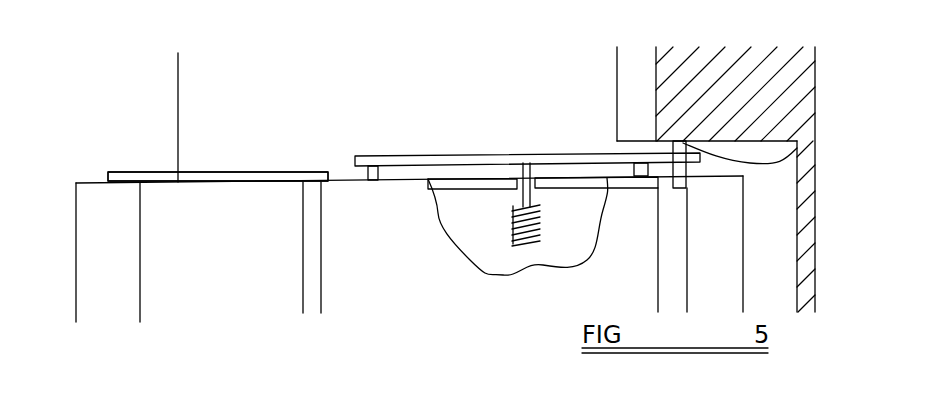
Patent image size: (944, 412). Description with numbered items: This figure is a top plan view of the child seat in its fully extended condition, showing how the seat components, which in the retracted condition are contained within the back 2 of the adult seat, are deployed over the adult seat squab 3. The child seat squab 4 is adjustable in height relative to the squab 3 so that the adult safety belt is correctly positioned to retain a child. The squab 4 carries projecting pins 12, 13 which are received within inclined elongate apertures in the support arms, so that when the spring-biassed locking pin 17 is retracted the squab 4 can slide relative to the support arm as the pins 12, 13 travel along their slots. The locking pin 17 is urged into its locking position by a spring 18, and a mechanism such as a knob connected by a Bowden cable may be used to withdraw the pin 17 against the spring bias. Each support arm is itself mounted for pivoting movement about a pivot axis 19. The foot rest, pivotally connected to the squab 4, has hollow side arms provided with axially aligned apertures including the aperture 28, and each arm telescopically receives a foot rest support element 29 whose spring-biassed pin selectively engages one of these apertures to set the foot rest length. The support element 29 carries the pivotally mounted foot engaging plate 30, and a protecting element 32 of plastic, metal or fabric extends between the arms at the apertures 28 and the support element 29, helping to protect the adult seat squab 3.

The back 2 is at (672, 66).
The squab 3 is at (237, 117).
The squab 4 is at (547, 244).
The projecting pin 12 is at (397, 164).
The projecting pin 13 is at (631, 164).
The locking pin 17 is at (517, 188).
The spring 18 is at (513, 242).
The pivot axis 19 is at (802, 150).
The aperture 28 is at (233, 180).
The foot rest support element 29 is at (157, 175).
The foot engaging plate 30 is at (88, 248).
The protecting element 32 is at (230, 252).